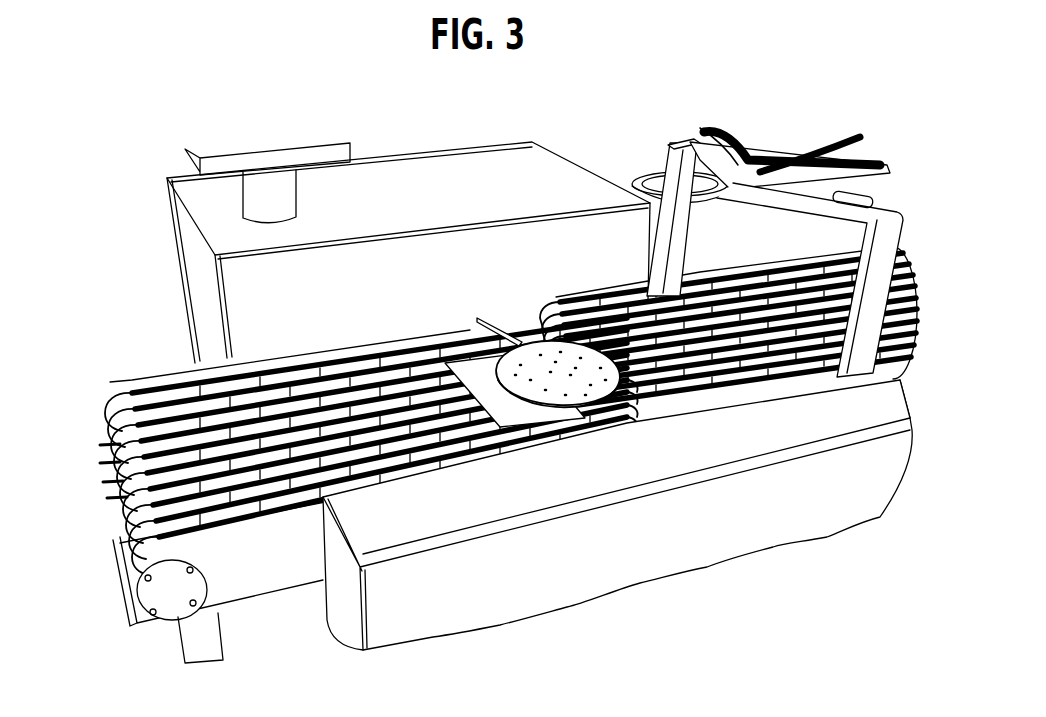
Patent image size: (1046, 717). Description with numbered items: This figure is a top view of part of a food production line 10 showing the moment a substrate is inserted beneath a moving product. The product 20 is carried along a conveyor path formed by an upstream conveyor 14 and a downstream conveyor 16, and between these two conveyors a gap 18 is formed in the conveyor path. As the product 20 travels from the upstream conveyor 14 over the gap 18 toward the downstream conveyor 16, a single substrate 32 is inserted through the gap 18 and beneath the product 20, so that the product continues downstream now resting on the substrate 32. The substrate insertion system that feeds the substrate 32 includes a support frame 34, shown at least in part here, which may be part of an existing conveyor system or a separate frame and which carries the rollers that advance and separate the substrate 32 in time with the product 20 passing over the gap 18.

The food production line 10 is at (743, 115).
The upstream conveyor 14 is at (773, 377).
The downstream conveyor 16 is at (124, 509).
The gap 18 is at (627, 433).
The product 20 is at (523, 340).
The substrate 32 is at (468, 365).
The support frame 34 is at (343, 615).